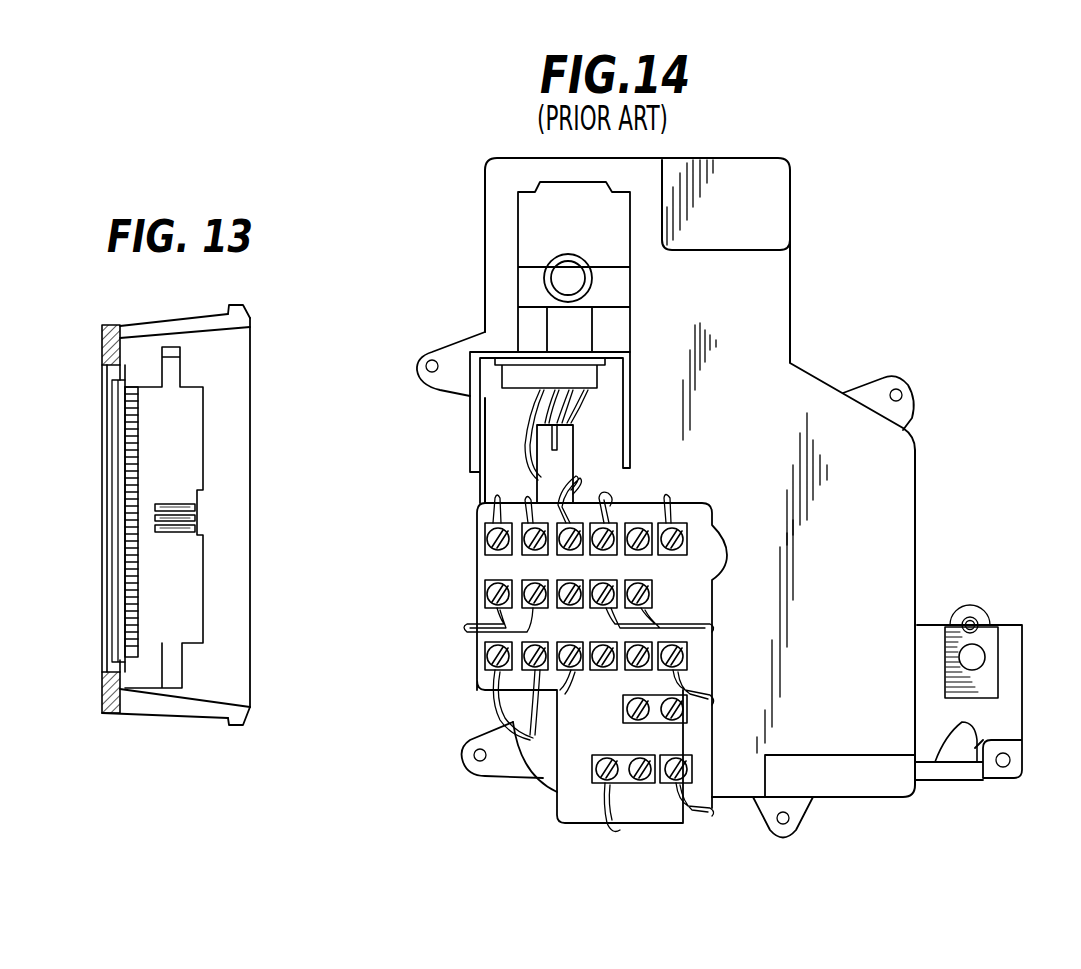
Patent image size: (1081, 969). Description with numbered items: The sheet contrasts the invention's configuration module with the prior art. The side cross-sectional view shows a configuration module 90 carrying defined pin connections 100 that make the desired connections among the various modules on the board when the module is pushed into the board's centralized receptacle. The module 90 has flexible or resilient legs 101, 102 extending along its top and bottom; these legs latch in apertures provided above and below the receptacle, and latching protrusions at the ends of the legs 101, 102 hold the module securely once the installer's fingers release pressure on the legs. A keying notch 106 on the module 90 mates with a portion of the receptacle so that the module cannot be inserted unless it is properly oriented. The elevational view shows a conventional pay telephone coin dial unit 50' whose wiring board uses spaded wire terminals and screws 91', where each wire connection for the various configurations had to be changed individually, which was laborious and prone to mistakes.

In FIG. 13, the configuration module 90 is at (102, 350).
In FIG. 13, the pin connections 100 is at (138, 460).
In FIG. 13, the flexible leg 101 is at (170, 323).
In FIG. 13, the flexible leg 102 is at (166, 716).
In FIG. 13, the keying notch 106 is at (197, 512).
In FIG. 14, the prior art housing 50' is at (719, 498).
In FIG. 14, the spaded wire terminals and screws 91' is at (608, 661).